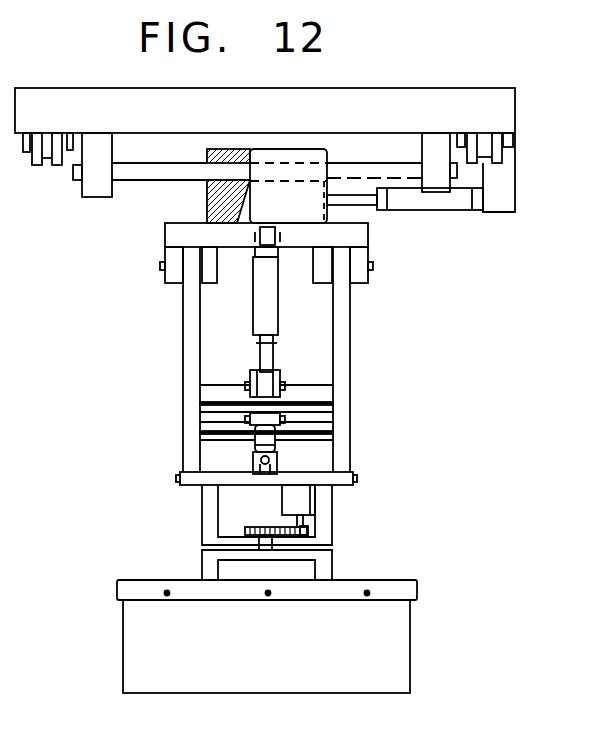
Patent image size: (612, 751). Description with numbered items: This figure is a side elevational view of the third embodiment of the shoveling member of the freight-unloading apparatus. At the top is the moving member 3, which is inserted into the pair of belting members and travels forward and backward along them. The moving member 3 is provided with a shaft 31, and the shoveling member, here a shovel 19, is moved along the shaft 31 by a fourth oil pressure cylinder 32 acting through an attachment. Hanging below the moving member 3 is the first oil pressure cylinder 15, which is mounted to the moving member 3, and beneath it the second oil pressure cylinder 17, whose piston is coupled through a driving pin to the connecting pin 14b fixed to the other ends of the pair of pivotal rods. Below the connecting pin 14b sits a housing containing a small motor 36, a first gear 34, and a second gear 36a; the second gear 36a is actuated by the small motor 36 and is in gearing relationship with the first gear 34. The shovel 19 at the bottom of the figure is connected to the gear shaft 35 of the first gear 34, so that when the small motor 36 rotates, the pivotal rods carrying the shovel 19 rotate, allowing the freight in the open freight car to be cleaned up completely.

The moving member 3 is at (413, 100).
The shaft 31 is at (133, 173).
The fourth oil pressure cylinder 32 is at (446, 204).
The first oil pressure cylinder 15 is at (263, 302).
The second oil pressure cylinder 17 is at (250, 447).
The connecting pin 14b is at (318, 482).
The small motor 36 is at (305, 503).
The first gear 34 is at (252, 527).
The second gear 36a is at (307, 532).
The gear shaft 35 is at (272, 547).
The shovel 19 is at (135, 633).